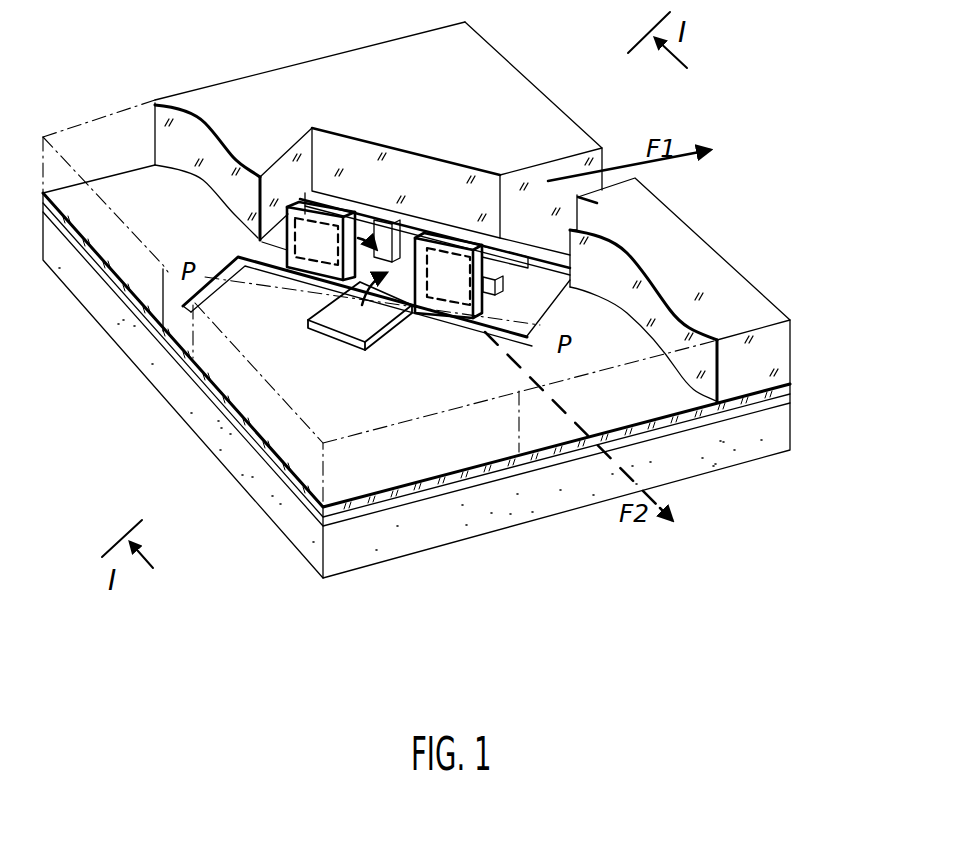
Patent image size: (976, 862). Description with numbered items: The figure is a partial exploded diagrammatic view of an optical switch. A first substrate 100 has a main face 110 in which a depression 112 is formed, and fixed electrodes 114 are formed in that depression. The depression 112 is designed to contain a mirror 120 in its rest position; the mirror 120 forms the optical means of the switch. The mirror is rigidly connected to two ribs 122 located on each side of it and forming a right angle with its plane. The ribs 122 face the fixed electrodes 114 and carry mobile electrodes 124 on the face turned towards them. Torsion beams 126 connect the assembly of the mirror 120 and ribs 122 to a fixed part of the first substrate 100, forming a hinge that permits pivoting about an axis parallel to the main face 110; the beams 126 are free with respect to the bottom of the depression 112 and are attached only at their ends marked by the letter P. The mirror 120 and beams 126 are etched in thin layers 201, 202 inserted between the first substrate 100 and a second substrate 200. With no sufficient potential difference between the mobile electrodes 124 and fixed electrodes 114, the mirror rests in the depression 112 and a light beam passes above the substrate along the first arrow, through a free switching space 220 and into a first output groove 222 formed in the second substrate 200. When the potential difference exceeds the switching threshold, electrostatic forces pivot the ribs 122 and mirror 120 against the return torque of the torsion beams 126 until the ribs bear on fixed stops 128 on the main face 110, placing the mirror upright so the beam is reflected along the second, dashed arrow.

The first substrate 100 is at (715, 458).
The main face 110 is at (307, 463).
The depression 112 is at (207, 282).
The fixed electrodes 114 is at (573, 262).
The mirror 120 is at (342, 320).
The ribs 122 is at (328, 213).
The mobile electrodes 124 is at (283, 200).
The torsion beams 126 is at (247, 248).
The fixed stops 128 is at (377, 232).
The second substrate 200 is at (188, 96).
The thin layer 201 is at (417, 497).
The thin layer 202 is at (490, 470).
The free switching space 220 is at (335, 160).
The first output groove 222 is at (560, 178).